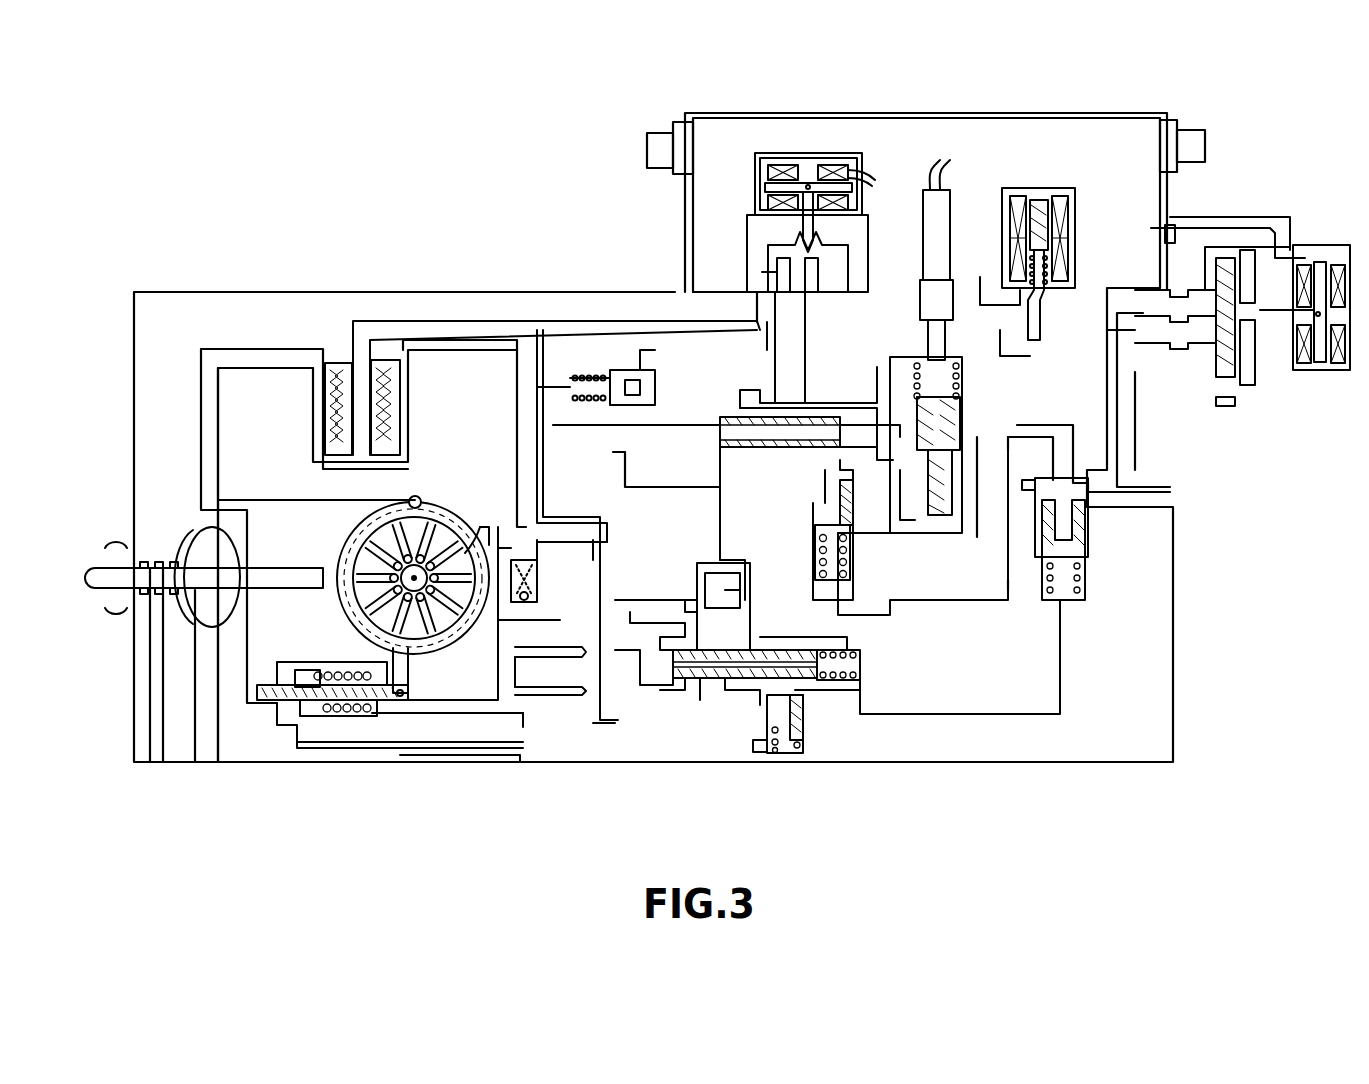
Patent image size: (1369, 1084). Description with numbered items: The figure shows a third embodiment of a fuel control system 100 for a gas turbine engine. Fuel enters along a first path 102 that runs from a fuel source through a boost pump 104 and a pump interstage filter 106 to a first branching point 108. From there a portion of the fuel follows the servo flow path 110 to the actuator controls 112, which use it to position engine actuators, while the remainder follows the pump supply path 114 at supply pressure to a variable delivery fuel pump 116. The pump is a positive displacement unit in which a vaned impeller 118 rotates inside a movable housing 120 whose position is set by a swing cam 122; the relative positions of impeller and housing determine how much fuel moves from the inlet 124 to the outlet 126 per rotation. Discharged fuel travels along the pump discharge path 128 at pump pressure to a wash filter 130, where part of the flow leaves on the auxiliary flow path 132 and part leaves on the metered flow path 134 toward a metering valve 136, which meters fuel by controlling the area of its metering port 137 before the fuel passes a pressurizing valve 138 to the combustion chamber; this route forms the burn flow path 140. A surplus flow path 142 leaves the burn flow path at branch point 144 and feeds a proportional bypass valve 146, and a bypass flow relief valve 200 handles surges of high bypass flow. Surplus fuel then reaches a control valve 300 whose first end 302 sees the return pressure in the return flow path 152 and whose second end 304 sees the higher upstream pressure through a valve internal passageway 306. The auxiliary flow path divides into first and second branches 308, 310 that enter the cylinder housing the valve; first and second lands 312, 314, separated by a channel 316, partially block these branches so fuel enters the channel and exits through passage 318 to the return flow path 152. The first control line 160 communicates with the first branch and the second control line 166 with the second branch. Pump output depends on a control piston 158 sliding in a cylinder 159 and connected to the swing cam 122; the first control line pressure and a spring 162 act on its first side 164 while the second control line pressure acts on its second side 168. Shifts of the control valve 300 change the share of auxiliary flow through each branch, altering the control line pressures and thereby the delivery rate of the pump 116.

The fuel control system 100 is at (158, 242).
The first path 102 is at (203, 743).
The boost pump 104 is at (200, 610).
The pump interstage filter 106 is at (345, 366).
The first branching point 108 is at (535, 328).
The servo flow path 110 is at (622, 368).
The actuator controls 112 is at (1243, 205).
The pump supply path 114 is at (523, 358).
The variable delivery fuel pump 116 is at (450, 506).
The vaned impeller 118 is at (373, 558).
The movable housing 120 is at (348, 534).
The swing cam 122 is at (410, 678).
The inlet 124 is at (478, 530).
The outlet 126 is at (550, 633).
The pump discharge path 128 is at (565, 490).
The wash filter 130 is at (738, 406).
The auxiliary flow path 132 is at (732, 518).
The metered flow path 134 is at (815, 432).
The metering valve 136 is at (916, 380).
The metering port 137 is at (955, 434).
The pressurizing valve 138 is at (1083, 535).
The burn flow path 140 is at (853, 460).
The surplus flow path 142 is at (813, 478).
The branch point 144 is at (853, 492).
The proportional bypass valve 146 is at (873, 563).
The return flow path 152 is at (598, 720).
The control piston 158 is at (303, 675).
The cylinder 159 is at (298, 705).
The first control line 160 is at (463, 728).
The spring 162 is at (367, 670).
The first side 164 is at (327, 715).
The second control line 166 is at (500, 750).
The second side 168 is at (295, 681).
The bypass flow relief valve 200 is at (792, 753).
The control valve 300 is at (683, 690).
The first end 302 is at (832, 660).
The second end 304 is at (680, 654).
The valve internal passageway 306 is at (705, 678).
The first branch 308 is at (742, 570).
The second branch 310 is at (697, 583).
The first land 312 is at (685, 640).
The second land 314 is at (795, 637).
The channel 316 is at (753, 693).
The passage 318 is at (723, 702).